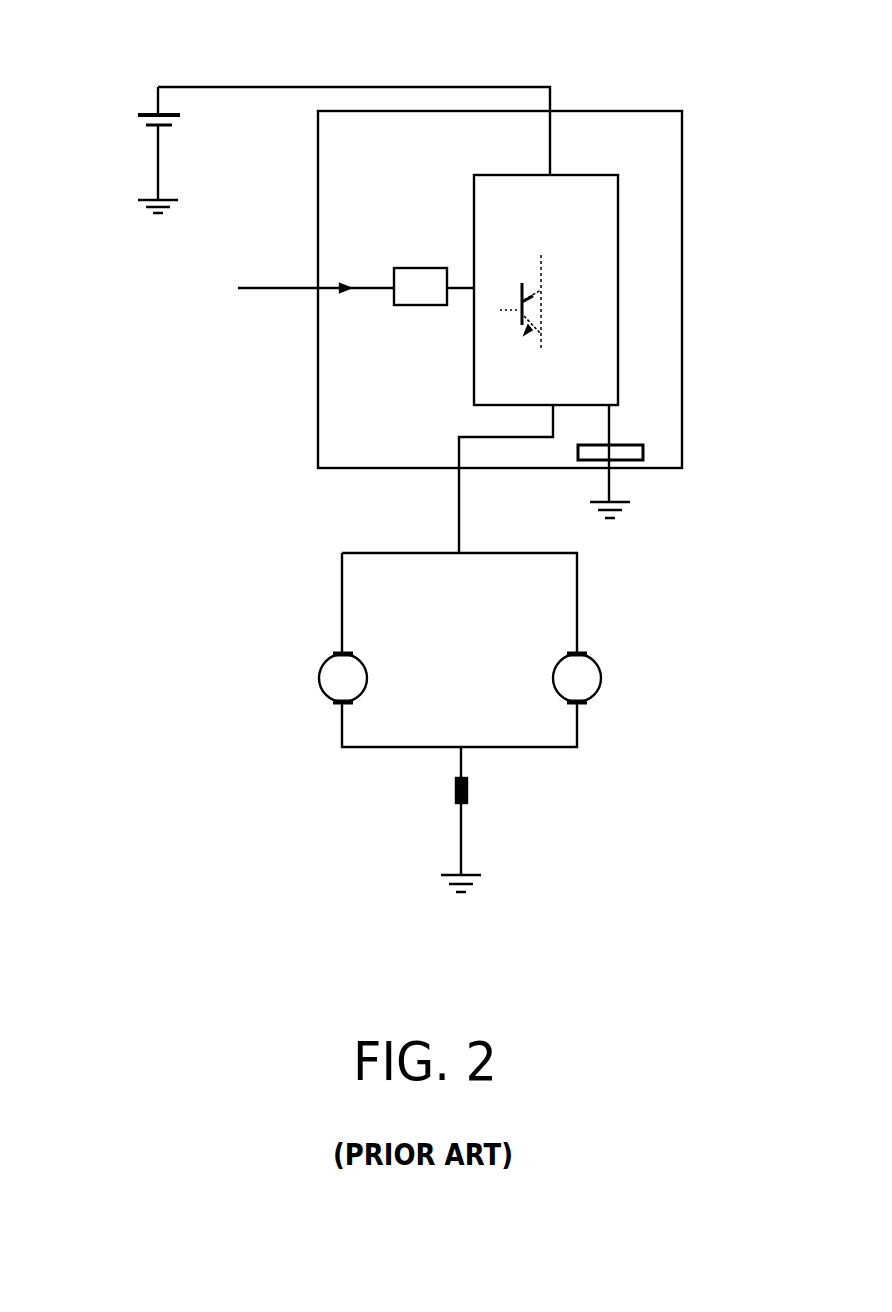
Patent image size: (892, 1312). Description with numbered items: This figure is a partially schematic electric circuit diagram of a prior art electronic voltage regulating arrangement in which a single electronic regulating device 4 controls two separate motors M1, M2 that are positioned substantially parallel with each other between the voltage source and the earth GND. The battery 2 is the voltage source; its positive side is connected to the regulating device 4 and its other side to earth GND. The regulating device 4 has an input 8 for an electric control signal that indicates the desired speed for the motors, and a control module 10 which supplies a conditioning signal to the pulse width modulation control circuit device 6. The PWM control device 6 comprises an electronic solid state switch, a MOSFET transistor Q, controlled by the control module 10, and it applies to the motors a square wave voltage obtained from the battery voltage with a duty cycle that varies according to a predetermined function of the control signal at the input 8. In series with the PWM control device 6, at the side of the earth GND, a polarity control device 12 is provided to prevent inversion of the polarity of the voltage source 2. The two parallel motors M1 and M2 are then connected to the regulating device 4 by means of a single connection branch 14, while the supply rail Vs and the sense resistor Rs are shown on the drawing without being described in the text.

The battery 2 is at (151, 113).
The electronic regulating device 4 is at (682, 385).
The PWM control circuit device 6 is at (618, 303).
The input 8 is at (278, 286).
The control module 10 is at (423, 310).
The polarity control device 12 is at (643, 450).
The connection branch 14 is at (454, 513).
The MOSFET transistor Q is at (526, 340).
The first motor M1 is at (320, 680).
The second motor M2 is at (604, 683).
The sense resistor Rs is at (456, 800).
The supply voltage Vs is at (238, 86).
The earth GND is at (157, 179).